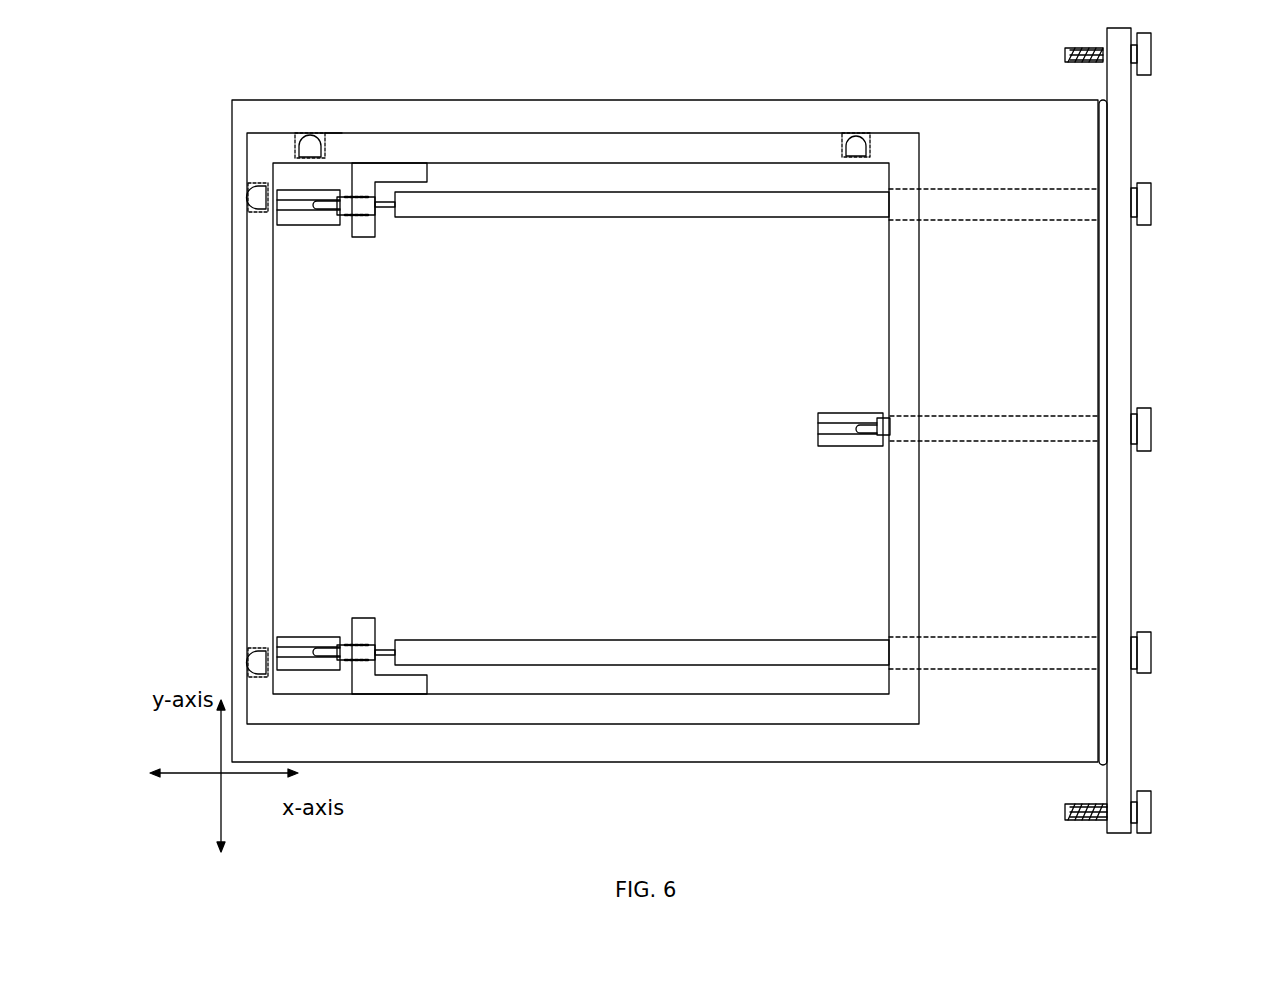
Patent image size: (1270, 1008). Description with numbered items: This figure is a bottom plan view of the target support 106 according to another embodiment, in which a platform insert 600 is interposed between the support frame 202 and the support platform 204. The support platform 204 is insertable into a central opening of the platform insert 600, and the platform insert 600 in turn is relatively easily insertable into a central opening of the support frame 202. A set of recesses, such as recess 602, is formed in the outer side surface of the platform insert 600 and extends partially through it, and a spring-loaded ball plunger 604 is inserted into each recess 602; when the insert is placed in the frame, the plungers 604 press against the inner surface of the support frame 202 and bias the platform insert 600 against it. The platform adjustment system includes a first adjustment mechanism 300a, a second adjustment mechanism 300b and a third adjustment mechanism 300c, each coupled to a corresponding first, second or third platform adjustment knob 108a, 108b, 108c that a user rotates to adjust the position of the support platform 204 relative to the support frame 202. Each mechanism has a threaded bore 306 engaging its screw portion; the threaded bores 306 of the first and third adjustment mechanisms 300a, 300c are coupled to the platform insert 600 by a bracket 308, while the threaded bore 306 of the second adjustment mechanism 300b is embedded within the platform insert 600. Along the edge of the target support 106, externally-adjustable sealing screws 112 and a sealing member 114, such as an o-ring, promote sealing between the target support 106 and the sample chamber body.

The target support 106 is at (563, 60).
The platform insert 600 is at (717, 140).
The support frame 202 is at (1059, 155).
The support platform 204 is at (779, 571).
The spring-loaded ball plunger 604 is at (307, 132).
The recess 602 is at (323, 127).
The bracket 308 is at (366, 178).
The threaded bore 306 is at (372, 232).
The first adjustment mechanism 300a is at (552, 234).
The second adjustment mechanism 300b is at (460, 612).
The third adjustment mechanism 300c is at (799, 401).
The sealing member 114 is at (1098, 100).
The sealing screws 112 is at (1167, 47).
The first platform adjustment knob 108a is at (1148, 183).
The second platform adjustment knob 108b is at (1148, 408).
The third platform adjustment knob 108c is at (1148, 632).